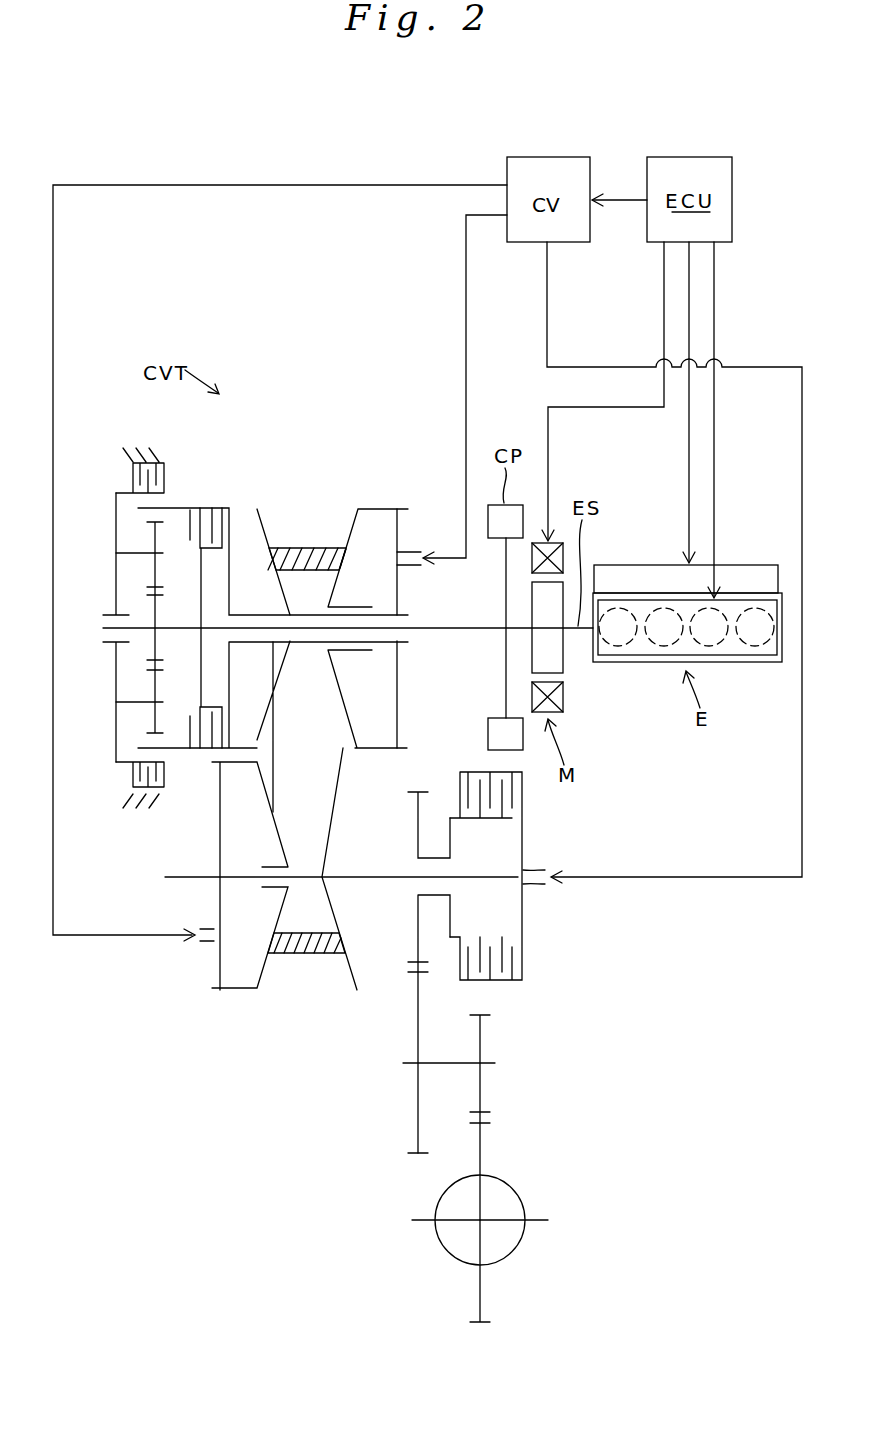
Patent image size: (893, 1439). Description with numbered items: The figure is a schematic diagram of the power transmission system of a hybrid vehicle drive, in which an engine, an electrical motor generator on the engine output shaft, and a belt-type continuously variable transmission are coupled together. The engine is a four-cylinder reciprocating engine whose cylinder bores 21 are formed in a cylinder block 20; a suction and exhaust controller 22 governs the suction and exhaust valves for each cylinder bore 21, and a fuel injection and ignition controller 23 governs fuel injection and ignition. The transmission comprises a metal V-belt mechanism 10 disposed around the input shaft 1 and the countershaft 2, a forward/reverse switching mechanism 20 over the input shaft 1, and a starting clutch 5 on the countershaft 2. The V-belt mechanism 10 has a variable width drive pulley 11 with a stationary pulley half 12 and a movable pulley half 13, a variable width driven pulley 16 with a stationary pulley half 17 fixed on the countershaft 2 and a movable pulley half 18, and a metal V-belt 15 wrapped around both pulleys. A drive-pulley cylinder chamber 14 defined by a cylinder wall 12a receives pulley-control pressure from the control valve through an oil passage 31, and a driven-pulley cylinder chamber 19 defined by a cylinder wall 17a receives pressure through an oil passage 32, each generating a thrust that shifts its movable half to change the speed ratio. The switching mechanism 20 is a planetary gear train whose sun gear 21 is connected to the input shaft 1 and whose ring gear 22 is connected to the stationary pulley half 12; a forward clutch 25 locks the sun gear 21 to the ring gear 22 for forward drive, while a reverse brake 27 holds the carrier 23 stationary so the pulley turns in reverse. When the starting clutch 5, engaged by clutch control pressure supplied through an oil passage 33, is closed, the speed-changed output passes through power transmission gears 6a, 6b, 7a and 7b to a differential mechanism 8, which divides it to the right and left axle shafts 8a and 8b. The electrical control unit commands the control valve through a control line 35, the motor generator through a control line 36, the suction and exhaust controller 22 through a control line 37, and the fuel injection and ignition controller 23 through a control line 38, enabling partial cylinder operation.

The input shaft 1 is at (463, 640).
The countershaft 2 is at (380, 880).
The starting clutch 5 is at (538, 957).
The power transmission gear 6a is at (418, 823).
The power transmission gear 6b is at (410, 1153).
The power transmission gear 7a is at (482, 1041).
The power transmission gear 7b is at (482, 1151).
The differential mechanism 8 is at (447, 1253).
The axle shaft 8a is at (425, 1220).
The axle shaft 8b is at (538, 1214).
The metal V-belt mechanism 10 is at (358, 460).
The variable width drive pulley 11 is at (378, 503).
The stationary pulley half 12 is at (262, 518).
The cylinder wall 12a is at (398, 591).
The movable pulley half 13 is at (347, 518).
The drive-pulley cylinder chamber 14 is at (378, 582).
The metal V-belt 15 is at (345, 748).
The variable width driven pulley 16 is at (270, 995).
The stationary pulley half 17 is at (348, 970).
The cylinder wall 17a is at (220, 843).
The movable pulley half 18 is at (272, 975).
The driven-pulley cylinder chamber 19 is at (261, 853).
The forward/reverse switching mechanism 20 is at (113, 443).
The sun gear 21 is at (155, 615).
The ring gear 22 is at (138, 748).
The carrier 23 is at (116, 531).
The forward clutch 25 is at (209, 507).
The reverse brake 27 is at (133, 478).
The oil passage 31 is at (466, 302).
The oil passage 32 is at (272, 184).
The oil passage 33 is at (762, 366).
The control line 35 is at (617, 199).
The control line 36 is at (607, 408).
The control line 37 is at (714, 483).
The control line 38 is at (689, 446).